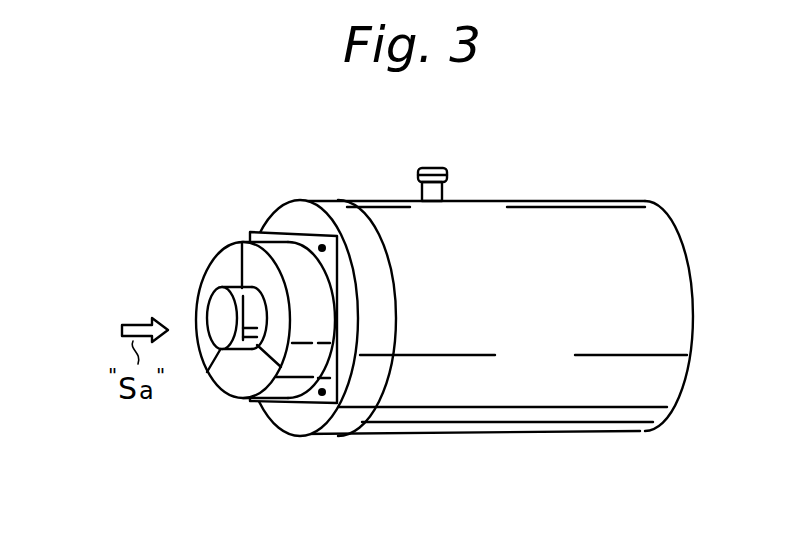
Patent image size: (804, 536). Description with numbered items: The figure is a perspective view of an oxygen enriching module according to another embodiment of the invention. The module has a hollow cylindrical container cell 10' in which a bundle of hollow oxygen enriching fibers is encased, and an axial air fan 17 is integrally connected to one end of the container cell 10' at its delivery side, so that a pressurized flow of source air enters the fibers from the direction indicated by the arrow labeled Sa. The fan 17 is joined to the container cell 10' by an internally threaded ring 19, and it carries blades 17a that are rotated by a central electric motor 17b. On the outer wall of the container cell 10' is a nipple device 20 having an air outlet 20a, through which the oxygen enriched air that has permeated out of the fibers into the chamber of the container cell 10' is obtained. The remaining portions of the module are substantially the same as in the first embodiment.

The container cell 10' is at (496, 284).
The internally threaded ring 19 is at (327, 208).
The axial air fan 17 is at (232, 339).
The blades 17a is at (225, 262).
The central electric motor 17b is at (215, 308).
The nipple device 20 is at (465, 158).
The air outlet 20a is at (432, 168).